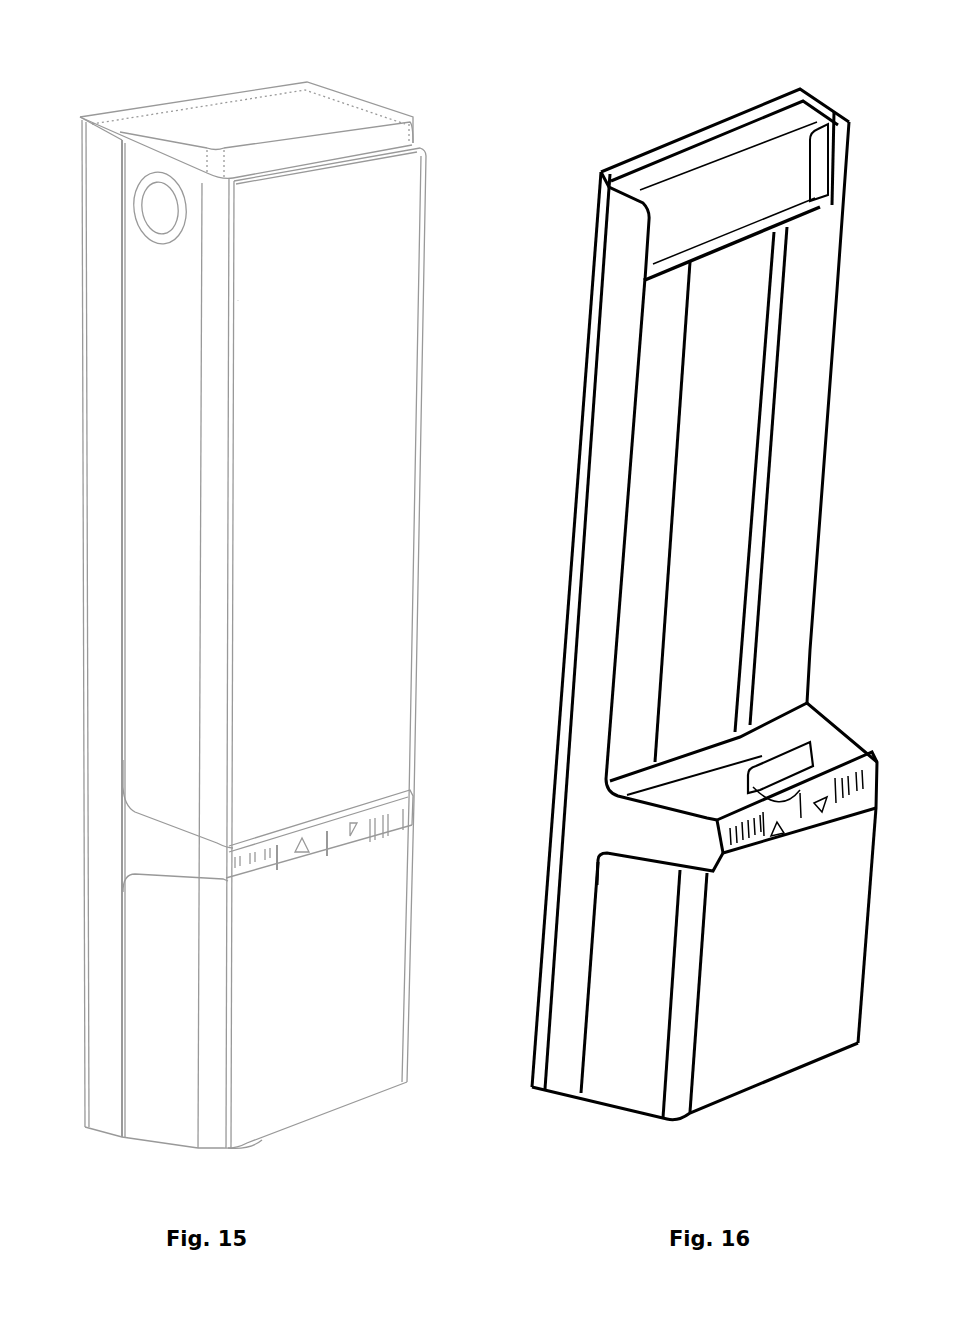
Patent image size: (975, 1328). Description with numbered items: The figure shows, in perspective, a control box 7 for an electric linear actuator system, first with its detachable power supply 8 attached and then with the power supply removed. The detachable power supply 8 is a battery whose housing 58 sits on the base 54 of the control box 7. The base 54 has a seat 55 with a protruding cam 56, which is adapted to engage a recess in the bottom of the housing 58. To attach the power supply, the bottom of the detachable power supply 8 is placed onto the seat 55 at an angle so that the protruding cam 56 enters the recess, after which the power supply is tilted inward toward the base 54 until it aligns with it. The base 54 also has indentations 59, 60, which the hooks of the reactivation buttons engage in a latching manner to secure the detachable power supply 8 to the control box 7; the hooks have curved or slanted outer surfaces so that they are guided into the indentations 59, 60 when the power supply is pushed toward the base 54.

In FIG. 15, the control box 7 is at (344, 56).
In FIG. 15, the detachable power supply 8 is at (425, 375).
In FIG. 15, the base 54 is at (105, 593).
In FIG. 16, the base 54 is at (593, 643).
In FIG. 16, the seat 55 is at (770, 738).
In FIG. 16, the protruding cam 56 is at (788, 758).
In FIG. 15, the housing 58 is at (382, 529).
In FIG. 16, the indentation 59 is at (653, 237).
In FIG. 16, the indentation 60 is at (837, 197).